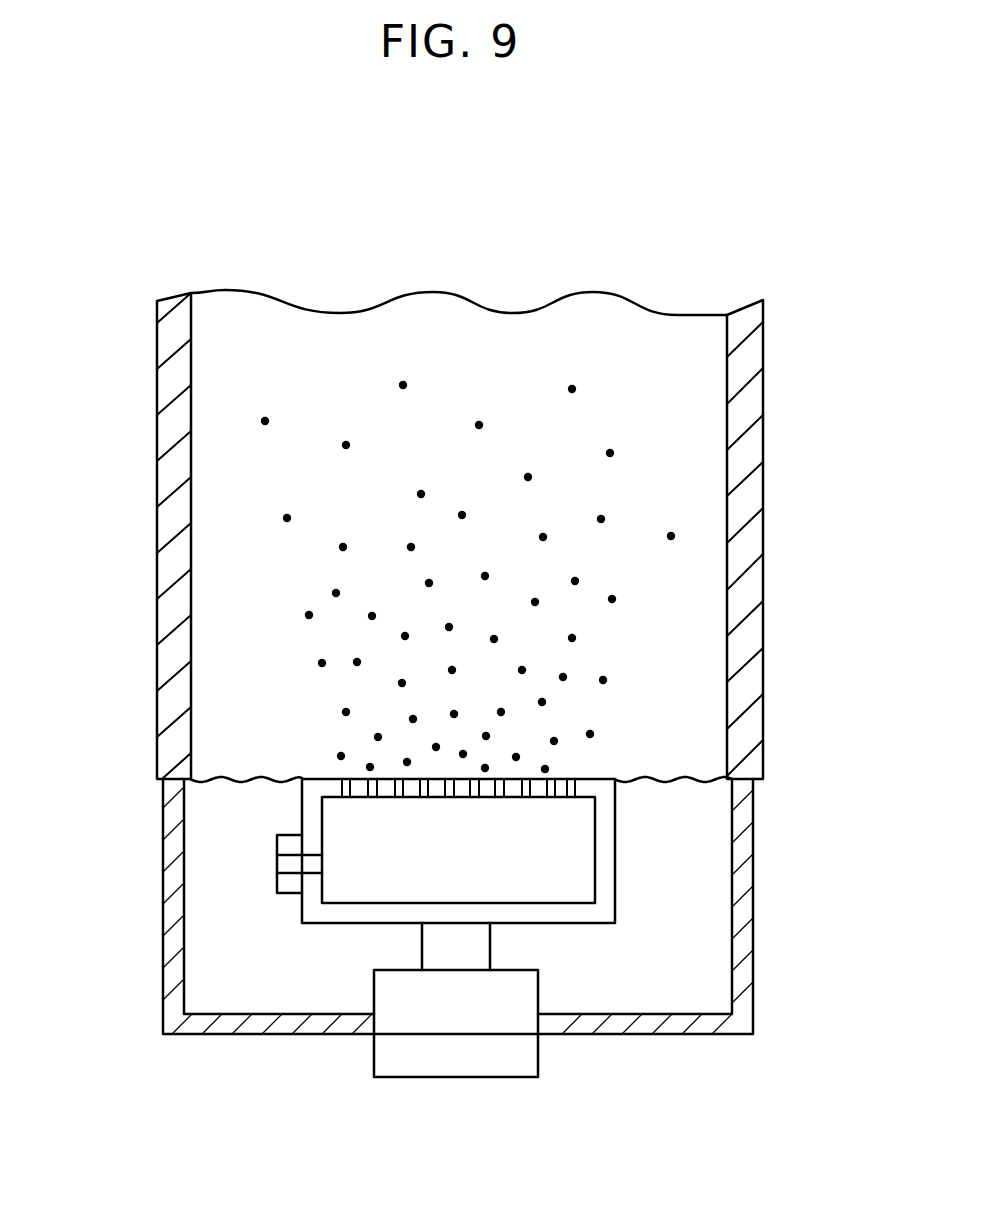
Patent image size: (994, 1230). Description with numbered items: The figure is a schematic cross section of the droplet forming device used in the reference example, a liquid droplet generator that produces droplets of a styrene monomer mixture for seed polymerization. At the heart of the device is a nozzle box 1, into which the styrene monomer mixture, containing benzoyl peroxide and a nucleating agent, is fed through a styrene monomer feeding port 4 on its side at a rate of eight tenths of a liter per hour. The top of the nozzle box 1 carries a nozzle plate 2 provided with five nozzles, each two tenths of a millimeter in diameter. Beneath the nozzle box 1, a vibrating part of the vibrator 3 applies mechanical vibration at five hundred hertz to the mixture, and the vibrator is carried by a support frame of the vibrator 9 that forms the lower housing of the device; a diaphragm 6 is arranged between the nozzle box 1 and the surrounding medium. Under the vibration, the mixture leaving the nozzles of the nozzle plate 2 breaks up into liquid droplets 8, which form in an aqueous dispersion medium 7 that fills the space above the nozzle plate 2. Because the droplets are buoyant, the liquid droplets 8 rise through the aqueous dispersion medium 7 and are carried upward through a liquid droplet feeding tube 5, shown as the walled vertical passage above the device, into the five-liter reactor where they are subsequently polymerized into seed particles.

The nozzle box 1 is at (605, 898).
The nozzle plate 2 is at (562, 781).
The vibrating part of the vibrator 3 is at (438, 945).
The styrene monomer feeding port 4 is at (290, 864).
The liquid droplet feeding tube 5 is at (172, 427).
The diaphragm 6 is at (673, 783).
The aqueous dispersion medium 7 is at (676, 620).
The liquid droplets 8 is at (628, 442).
The support frame of the vibrator 9 is at (637, 1023).